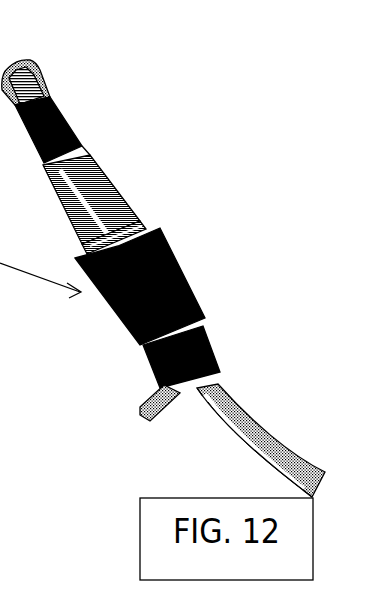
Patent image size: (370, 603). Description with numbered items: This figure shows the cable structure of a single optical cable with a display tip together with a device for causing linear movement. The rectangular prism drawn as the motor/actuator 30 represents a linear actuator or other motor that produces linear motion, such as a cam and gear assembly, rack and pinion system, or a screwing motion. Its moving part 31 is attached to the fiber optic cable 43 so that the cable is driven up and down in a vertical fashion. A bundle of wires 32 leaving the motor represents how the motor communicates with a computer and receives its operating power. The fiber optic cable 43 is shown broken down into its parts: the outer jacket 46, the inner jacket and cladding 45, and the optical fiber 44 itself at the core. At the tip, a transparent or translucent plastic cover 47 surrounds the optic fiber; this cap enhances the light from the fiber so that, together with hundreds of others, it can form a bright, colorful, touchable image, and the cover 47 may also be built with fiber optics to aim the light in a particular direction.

The motor/actuator 30 is at (180, 281).
The moving part 31 is at (130, 224).
The bundle of wires 32 is at (140, 407).
The fiber optic cable 43 is at (242, 412).
The optical fiber 44 is at (32, 91).
The inner jacket and cladding 45 is at (72, 127).
The outer jacket 46 is at (110, 184).
The plastic cover 47 is at (18, 64).